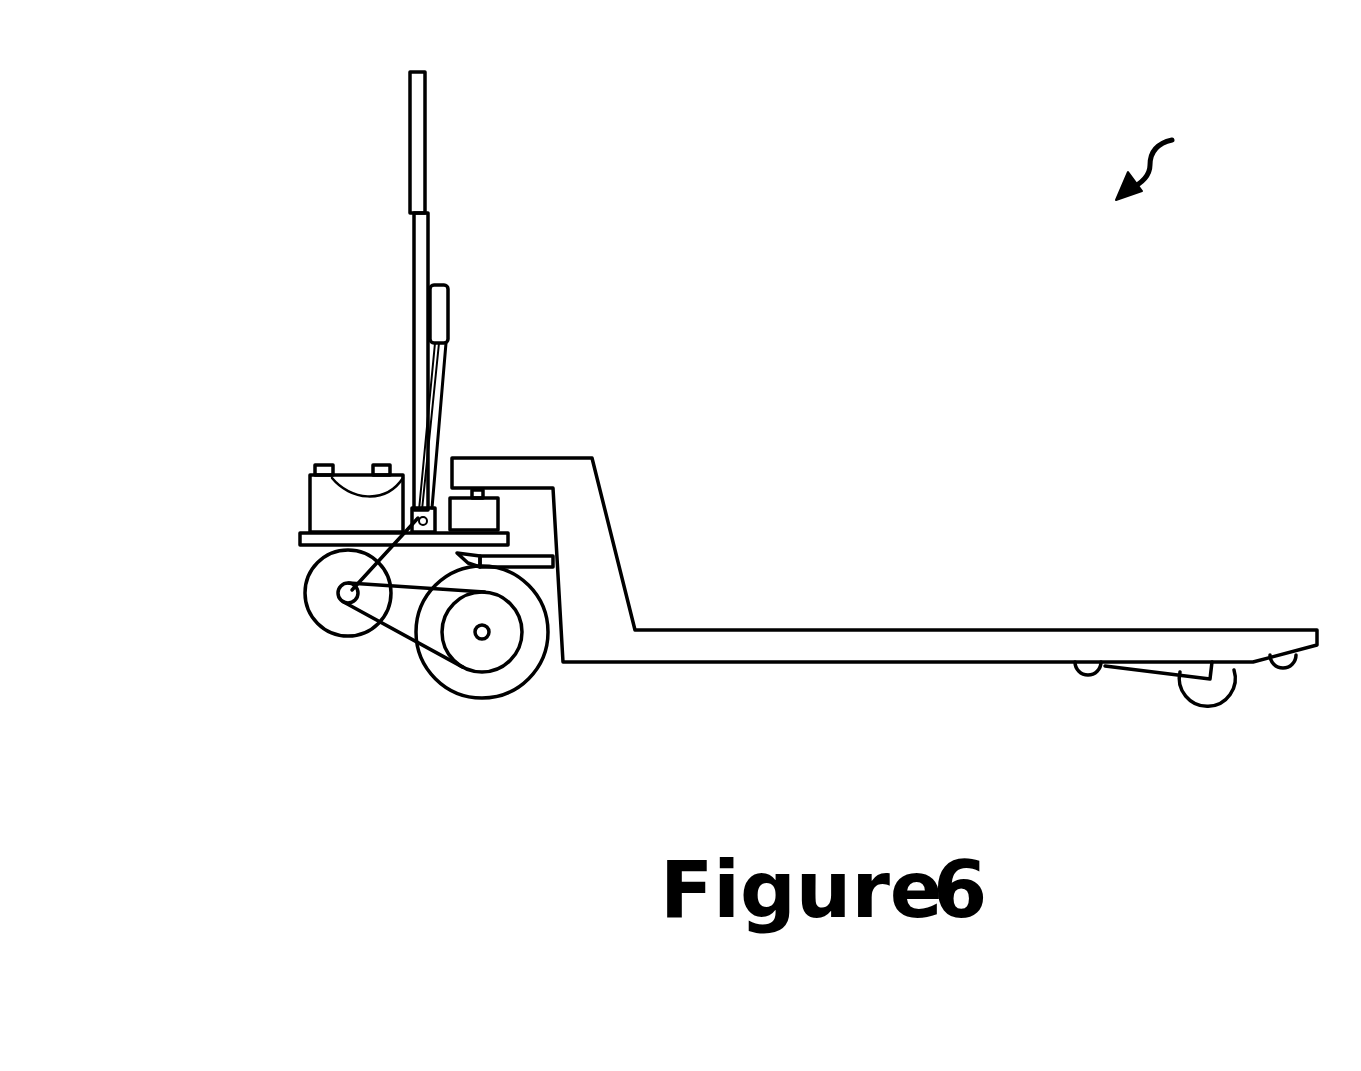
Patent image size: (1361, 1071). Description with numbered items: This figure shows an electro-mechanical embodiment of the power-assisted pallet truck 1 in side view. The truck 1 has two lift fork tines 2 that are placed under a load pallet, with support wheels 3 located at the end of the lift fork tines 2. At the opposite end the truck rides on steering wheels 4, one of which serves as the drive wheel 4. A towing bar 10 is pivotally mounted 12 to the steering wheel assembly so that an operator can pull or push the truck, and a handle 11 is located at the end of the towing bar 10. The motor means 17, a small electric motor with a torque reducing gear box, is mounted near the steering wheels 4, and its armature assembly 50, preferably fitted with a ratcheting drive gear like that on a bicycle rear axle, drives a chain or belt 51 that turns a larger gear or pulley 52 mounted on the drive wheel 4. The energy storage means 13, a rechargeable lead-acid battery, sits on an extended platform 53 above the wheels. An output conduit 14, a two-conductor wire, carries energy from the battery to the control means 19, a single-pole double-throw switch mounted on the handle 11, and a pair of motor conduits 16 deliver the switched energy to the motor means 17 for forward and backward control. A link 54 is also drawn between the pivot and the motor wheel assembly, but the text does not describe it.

The power-assisted pallet truck 1 is at (1153, 160).
The lift fork tines 2 is at (962, 645).
The support wheels 3 is at (1207, 697).
The steering wheels 4 is at (490, 690).
The towing bar 10 is at (413, 433).
The handle 11 is at (410, 152).
The pivotal mounting 12 is at (437, 480).
The energy storage means 13 is at (330, 493).
The output conduit 14 is at (452, 347).
The motor conduits 16 is at (452, 372).
The motor means 17 is at (310, 603).
The control means 19 is at (447, 283).
The armature assembly 50 is at (320, 625).
The drive chain or belt 51 is at (395, 637).
The gear or pulley 52 is at (507, 680).
The extended platform 53 is at (310, 540).
The pivot arm 54 is at (313, 563).